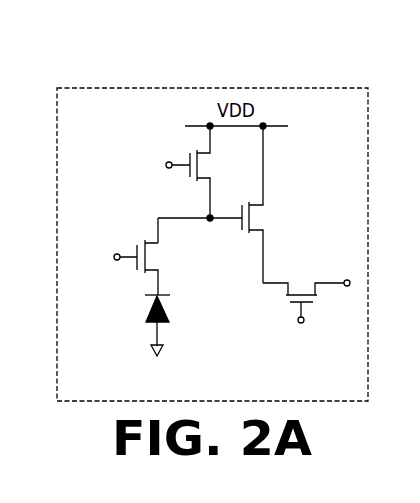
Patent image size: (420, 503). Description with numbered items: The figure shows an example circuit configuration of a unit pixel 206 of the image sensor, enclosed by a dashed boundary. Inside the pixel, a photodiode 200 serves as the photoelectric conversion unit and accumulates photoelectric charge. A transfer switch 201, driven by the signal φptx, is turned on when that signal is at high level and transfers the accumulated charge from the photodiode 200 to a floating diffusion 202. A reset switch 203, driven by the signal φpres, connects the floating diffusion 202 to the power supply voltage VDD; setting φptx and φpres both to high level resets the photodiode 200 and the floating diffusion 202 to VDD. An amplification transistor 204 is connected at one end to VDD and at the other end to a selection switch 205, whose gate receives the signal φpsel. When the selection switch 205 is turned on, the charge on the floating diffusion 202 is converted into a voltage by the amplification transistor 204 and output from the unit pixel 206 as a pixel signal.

The photodiode 200 is at (146, 313).
The transfer switch 201 is at (135, 244).
The floating diffusion 202 is at (209, 222).
The reset switch 203 is at (188, 154).
The amplification transistor 204 is at (252, 204).
The selection switch 205 is at (290, 303).
The unit pixel 206 is at (77, 86).